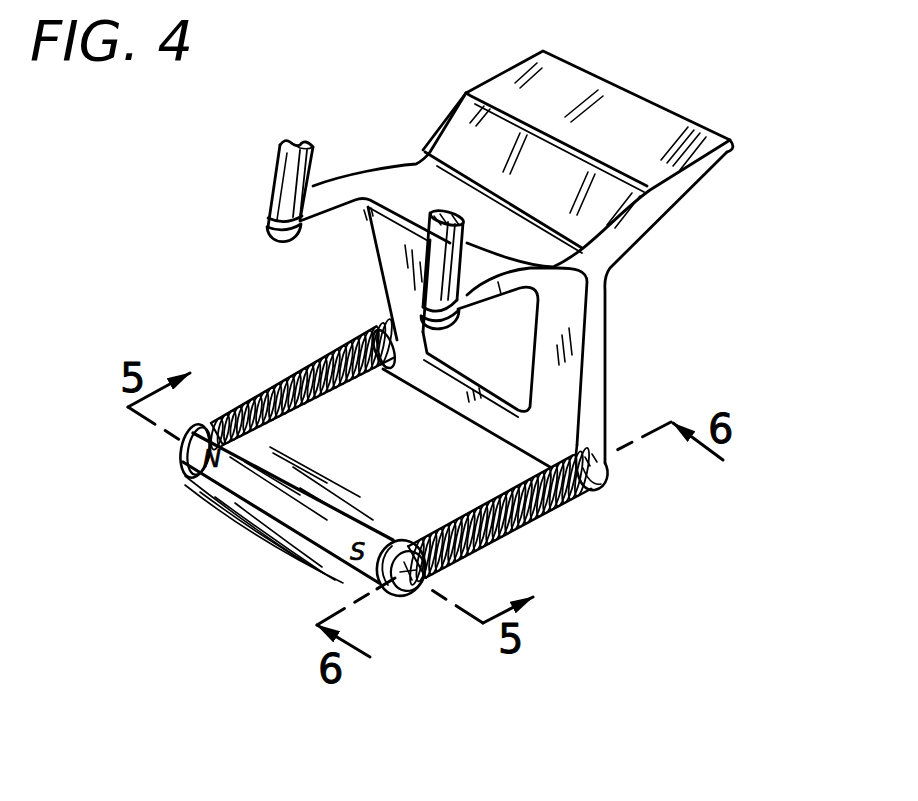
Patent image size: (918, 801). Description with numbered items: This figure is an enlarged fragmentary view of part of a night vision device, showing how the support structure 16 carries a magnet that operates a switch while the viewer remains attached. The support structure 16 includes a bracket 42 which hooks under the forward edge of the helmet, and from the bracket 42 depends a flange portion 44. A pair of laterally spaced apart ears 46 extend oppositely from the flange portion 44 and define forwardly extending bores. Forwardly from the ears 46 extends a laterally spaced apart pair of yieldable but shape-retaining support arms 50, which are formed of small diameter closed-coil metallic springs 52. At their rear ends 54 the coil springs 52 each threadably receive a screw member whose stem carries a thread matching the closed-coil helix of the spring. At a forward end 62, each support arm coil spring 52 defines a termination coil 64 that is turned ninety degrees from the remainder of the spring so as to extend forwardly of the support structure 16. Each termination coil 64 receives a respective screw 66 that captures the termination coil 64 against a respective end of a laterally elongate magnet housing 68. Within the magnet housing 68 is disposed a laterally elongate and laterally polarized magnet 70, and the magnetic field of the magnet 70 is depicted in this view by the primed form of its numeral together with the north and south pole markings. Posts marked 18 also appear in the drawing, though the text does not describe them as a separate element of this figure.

The support structure 16 is at (440, 110).
The mounting posts 18 is at (273, 166).
The bracket 42 is at (685, 185).
The flange portion 44 is at (581, 340).
The ears 46 is at (393, 342).
The support arms 50 is at (310, 358).
The coil springs 52 is at (322, 408).
The rear ends 54 is at (388, 350).
The forward end 62 is at (243, 405).
The termination coil 64 is at (183, 462).
The screw 66 is at (182, 450).
The magnet housing 68 is at (273, 500).
The magnet 70 is at (263, 540).